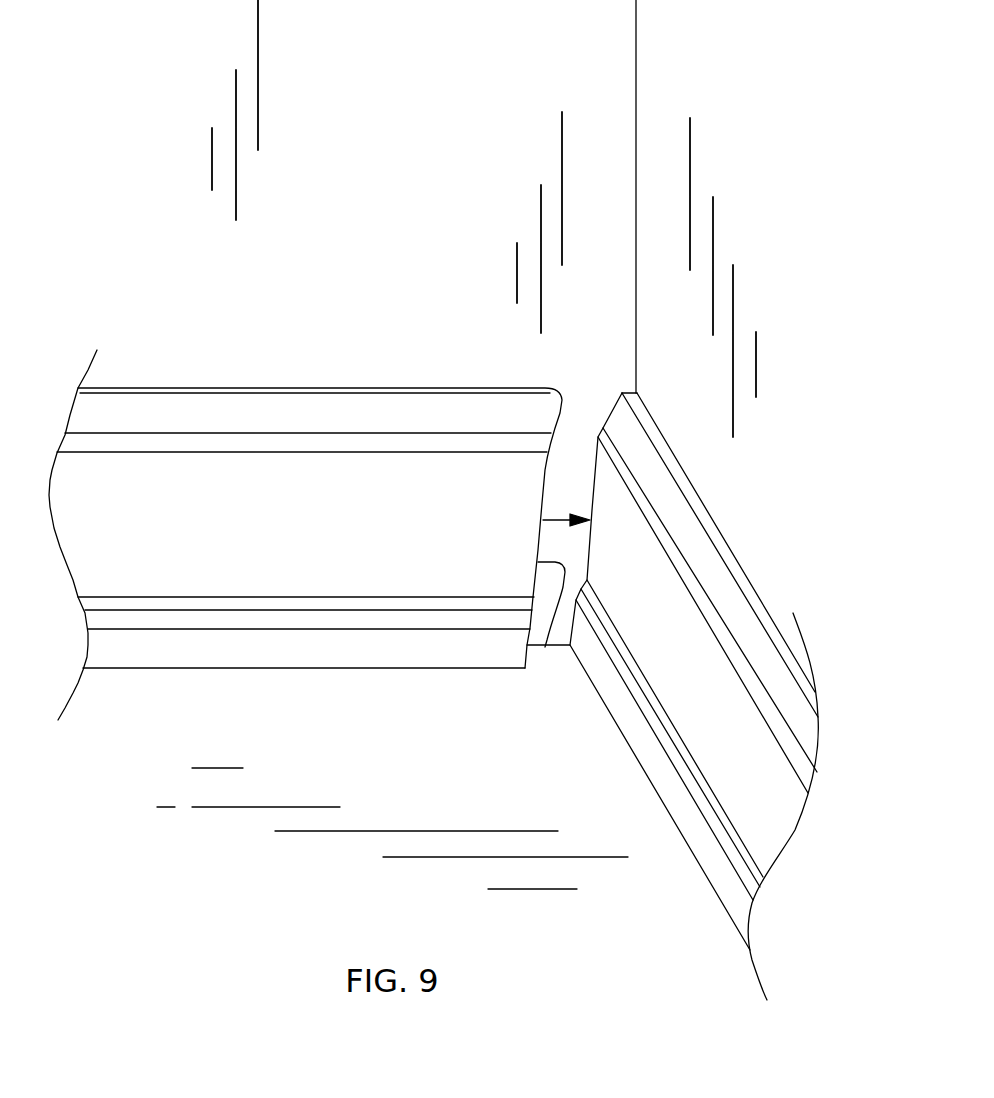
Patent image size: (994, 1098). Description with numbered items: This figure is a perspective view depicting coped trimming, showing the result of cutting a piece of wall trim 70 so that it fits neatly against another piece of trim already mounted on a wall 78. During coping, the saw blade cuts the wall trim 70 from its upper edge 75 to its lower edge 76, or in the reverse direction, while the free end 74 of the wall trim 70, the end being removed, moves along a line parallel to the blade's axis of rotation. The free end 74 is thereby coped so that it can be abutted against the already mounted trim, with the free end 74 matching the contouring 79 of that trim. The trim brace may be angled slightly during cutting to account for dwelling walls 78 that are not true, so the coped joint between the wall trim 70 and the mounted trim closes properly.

The wall trim 70 is at (309, 526).
The free end 74 is at (545, 647).
The upper edge 75 is at (392, 388).
The lower edge 76 is at (380, 668).
The wall 78 is at (713, 57).
The contouring 79 is at (725, 760).